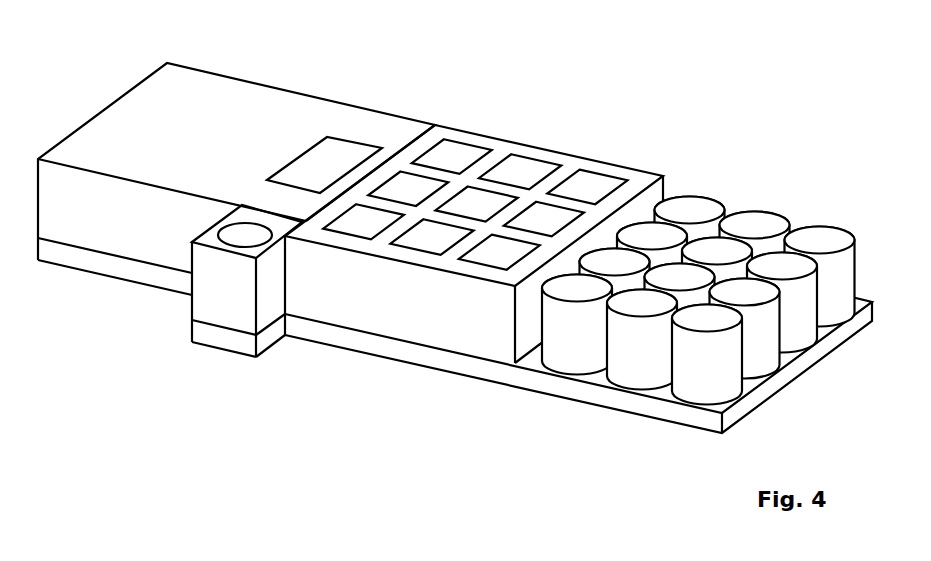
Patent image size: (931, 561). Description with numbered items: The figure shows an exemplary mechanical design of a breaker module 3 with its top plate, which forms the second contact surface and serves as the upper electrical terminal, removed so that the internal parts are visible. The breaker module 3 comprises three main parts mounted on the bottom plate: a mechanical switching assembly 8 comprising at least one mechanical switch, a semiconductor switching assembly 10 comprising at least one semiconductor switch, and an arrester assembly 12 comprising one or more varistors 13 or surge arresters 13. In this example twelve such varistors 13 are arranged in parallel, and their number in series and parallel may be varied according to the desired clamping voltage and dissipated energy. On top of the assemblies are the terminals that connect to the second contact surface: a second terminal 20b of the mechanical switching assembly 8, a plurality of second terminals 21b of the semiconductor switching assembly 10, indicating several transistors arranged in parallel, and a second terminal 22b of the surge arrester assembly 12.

The breaker module 3 is at (476, 246).
The mechanical switching assembly 8 is at (236, 192).
The semiconductor switching assembly 10 is at (578, 251).
The arrester assembly 12 is at (720, 281).
The varistor 13 is at (813, 323).
The second terminal of the mechanical switching assembly 20b is at (314, 110).
The second terminal of the semiconductor switching assembly 21b is at (475, 170).
The second terminal of the surge arrester assembly 22b is at (666, 197).